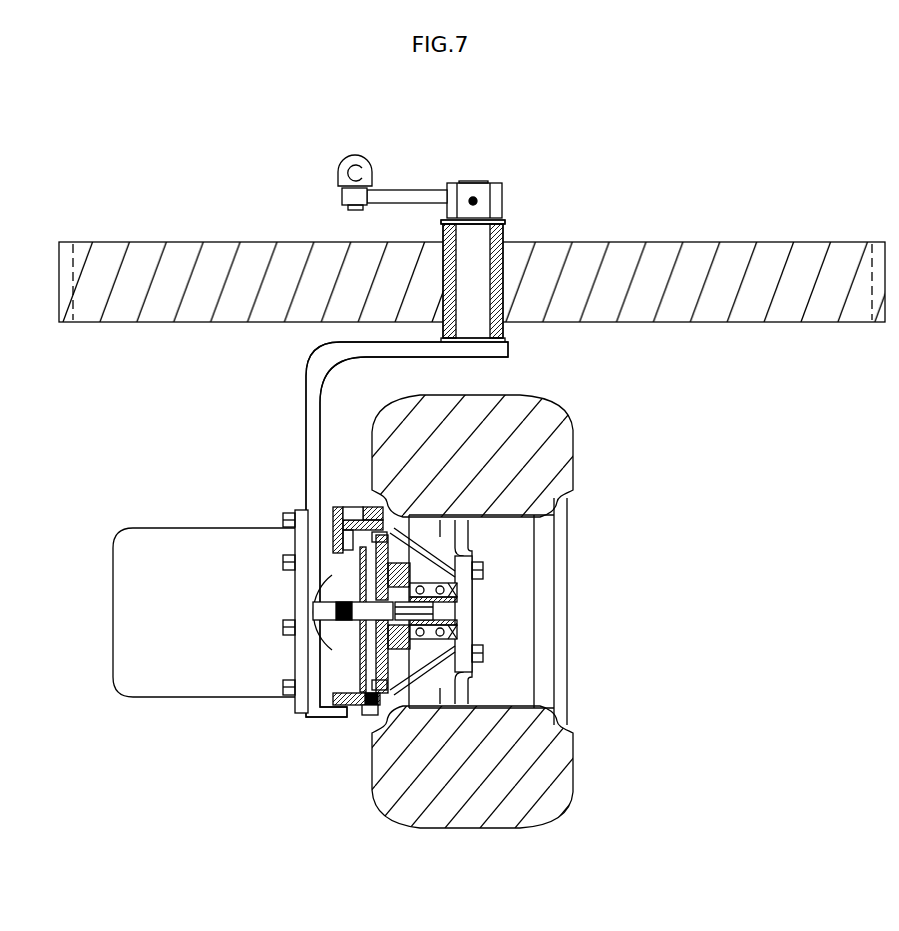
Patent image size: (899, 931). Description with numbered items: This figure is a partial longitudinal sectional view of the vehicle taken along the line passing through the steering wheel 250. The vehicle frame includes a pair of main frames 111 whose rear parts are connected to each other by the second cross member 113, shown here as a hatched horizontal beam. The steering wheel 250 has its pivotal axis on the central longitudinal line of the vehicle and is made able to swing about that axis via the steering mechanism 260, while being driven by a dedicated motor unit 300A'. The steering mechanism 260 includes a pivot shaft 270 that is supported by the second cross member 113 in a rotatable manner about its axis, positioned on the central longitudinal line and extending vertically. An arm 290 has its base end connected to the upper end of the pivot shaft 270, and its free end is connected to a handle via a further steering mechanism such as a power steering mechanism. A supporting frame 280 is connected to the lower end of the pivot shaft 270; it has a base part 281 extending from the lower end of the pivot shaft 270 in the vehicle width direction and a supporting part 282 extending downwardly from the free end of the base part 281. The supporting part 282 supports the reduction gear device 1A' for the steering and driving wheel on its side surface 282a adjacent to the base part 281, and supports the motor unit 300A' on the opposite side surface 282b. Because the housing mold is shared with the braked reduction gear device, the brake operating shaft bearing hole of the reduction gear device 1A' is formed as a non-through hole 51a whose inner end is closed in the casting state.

The main frame 111 is at (78, 268).
The second cross member 113 is at (145, 318).
The steering wheel 250 is at (612, 482).
The steering mechanism 260 is at (512, 177).
The pivot shaft 270 is at (473, 243).
The supporting frame 280 is at (297, 388).
The base part 281 is at (458, 350).
The supporting part 282 is at (312, 428).
The side surface 282a is at (320, 410).
The side surface 282b is at (306, 465).
The arm 290 is at (418, 193).
The non-through hole 51a is at (358, 513).
The motor unit 300A' is at (210, 672).
The reduction gear device 1A' is at (385, 698).